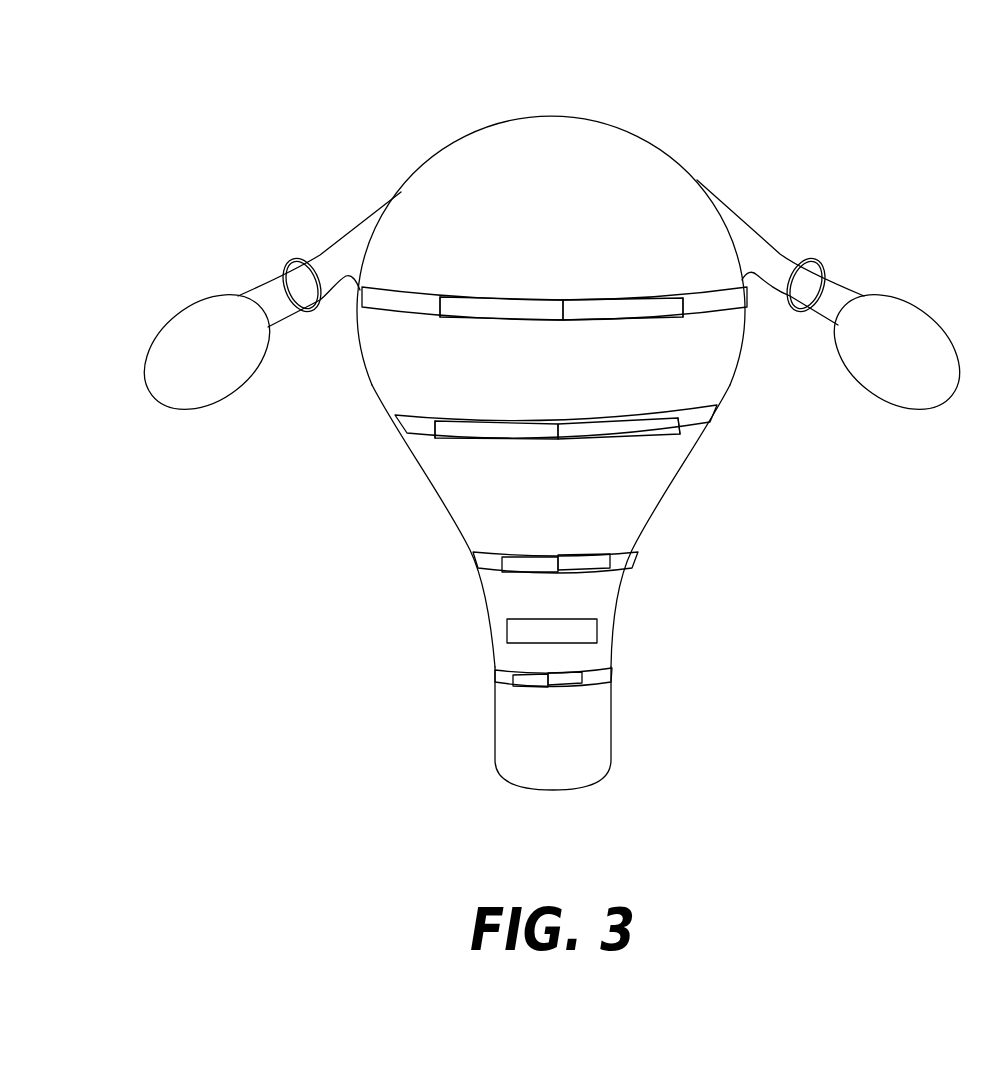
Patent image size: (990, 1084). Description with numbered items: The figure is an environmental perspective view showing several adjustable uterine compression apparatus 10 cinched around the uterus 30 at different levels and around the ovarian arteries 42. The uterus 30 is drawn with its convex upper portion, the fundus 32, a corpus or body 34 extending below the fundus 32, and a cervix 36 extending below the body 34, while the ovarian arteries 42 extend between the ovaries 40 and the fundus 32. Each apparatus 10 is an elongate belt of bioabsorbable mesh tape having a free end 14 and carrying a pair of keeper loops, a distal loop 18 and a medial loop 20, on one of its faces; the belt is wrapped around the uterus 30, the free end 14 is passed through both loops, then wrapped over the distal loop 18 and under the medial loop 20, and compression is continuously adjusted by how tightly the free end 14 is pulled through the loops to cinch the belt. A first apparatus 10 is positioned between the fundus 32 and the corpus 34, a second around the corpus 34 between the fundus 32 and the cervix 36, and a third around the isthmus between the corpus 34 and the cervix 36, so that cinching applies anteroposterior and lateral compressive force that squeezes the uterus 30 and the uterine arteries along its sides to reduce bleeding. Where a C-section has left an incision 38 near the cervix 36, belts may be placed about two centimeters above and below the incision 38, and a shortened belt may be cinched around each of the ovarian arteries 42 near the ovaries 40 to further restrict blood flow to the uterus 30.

The adjustable uterine compression apparatus 10 is at (288, 262).
The free end 14 is at (683, 300).
The distal loop 18 is at (440, 300).
The medial loop 20 is at (563, 310).
The uterus 30 is at (587, 417).
The fundus 32 is at (551, 116).
The corpus or body 34 is at (740, 370).
The cervix 36 is at (495, 707).
The incision 38 is at (512, 632).
The ovaries 40 is at (183, 308).
The ovarian arteries 42 is at (343, 243).